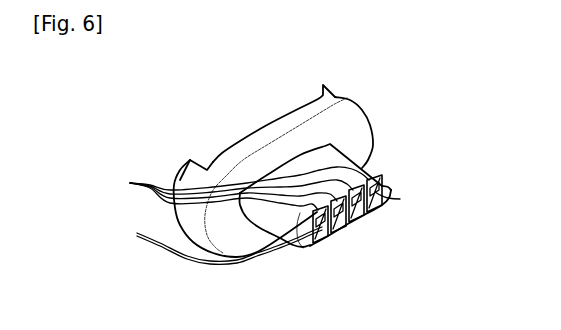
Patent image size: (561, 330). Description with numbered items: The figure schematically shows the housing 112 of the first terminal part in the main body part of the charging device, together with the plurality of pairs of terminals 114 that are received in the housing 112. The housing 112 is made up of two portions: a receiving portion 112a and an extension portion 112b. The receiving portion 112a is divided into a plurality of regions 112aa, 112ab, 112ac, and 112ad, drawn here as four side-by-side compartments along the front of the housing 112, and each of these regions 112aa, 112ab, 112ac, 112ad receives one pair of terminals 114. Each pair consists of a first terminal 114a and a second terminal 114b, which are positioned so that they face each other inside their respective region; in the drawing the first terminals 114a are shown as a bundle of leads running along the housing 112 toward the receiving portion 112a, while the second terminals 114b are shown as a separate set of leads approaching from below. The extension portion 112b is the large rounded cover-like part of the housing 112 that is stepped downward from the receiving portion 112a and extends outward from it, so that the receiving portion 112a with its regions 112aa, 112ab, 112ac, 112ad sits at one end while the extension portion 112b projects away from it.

The housing 112 is at (422, 82).
The receiving portion 112a is at (368, 166).
The extension portion 112b is at (353, 123).
The region 112aa is at (316, 243).
The region 112ab is at (338, 234).
The region 112ac is at (356, 224).
The region 112ad is at (374, 213).
The terminals 114 is at (259, 214).
The first terminal 114a is at (131, 183).
The second terminal 114b is at (400, 199).